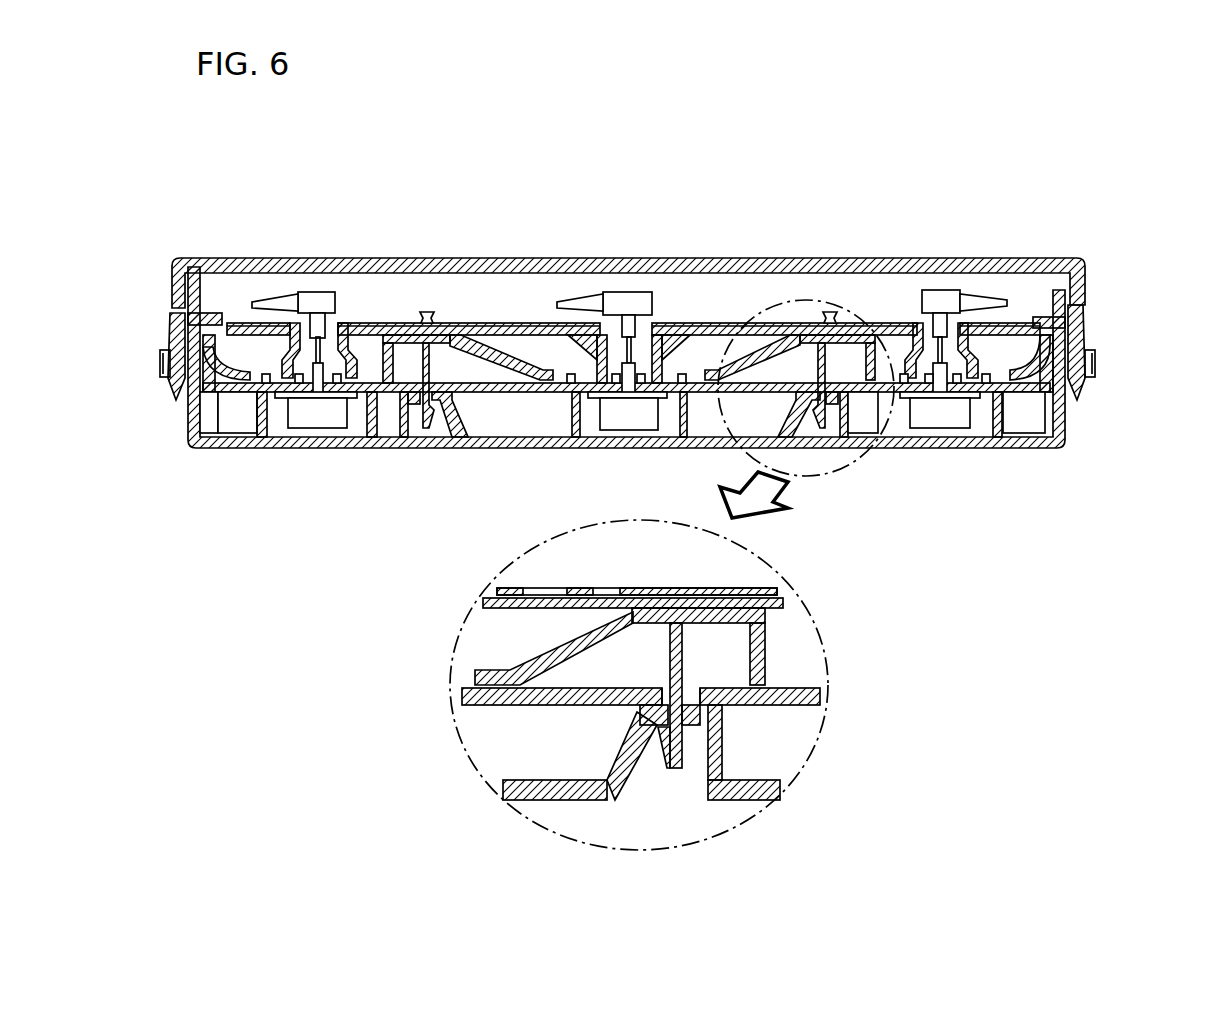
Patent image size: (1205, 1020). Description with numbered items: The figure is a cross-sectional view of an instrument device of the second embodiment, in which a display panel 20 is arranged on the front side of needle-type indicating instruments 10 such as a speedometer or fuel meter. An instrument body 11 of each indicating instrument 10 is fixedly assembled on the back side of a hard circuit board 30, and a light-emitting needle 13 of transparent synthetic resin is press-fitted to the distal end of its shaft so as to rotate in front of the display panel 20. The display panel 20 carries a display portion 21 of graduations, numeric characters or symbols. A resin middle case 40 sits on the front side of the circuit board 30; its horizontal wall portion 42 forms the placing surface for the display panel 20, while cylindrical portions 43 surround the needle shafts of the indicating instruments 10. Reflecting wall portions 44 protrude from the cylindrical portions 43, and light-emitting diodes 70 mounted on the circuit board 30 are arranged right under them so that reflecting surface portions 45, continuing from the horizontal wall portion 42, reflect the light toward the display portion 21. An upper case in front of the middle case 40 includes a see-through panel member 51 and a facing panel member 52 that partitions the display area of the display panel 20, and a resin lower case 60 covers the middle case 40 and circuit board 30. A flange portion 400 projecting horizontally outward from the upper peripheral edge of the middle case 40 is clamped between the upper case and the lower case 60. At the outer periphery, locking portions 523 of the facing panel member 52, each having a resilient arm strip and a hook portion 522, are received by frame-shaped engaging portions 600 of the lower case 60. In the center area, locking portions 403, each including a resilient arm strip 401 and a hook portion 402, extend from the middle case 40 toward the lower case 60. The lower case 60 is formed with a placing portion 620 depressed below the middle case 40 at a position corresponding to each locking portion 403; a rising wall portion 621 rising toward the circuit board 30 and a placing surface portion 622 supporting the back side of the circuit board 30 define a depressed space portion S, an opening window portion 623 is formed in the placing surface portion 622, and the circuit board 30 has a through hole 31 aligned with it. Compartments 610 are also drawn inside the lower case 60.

The needle-type indicating instrument 10 is at (318, 283).
The instrument body 11 is at (317, 415).
The needle 13 is at (283, 302).
The display panel 20 is at (880, 322).
The display portion 21 is at (508, 325).
The circuit board 30 is at (513, 392).
The through hole 31 is at (688, 695).
The middle case 40 is at (758, 647).
The resilient arm strip 401 is at (675, 653).
The hook portion 402 is at (672, 743).
The locking portion 403 is at (433, 430).
The horizontal wall portion 42 is at (407, 330).
The cylindrical portion 43 is at (358, 343).
The reflecting wall portion 44 is at (663, 330).
The reflecting surface portion 45 is at (758, 352).
The see-through panel member 51 is at (865, 258).
The facing panel member 52 is at (212, 312).
The lower case 60 is at (935, 442).
The light-emitting diode 70 is at (268, 380).
The flange portion 400 is at (198, 322).
The frame-shaped engaging portion 600 is at (163, 358).
The compartment 610 is at (205, 418).
The placing portion 620 is at (470, 413).
The rising wall portion 621 is at (713, 745).
The placing surface portion 622 is at (653, 717).
The opening window portion 623 is at (693, 718).
The hook portion 522 is at (172, 384).
The locking portion 523 is at (170, 408).
The depressed space portion S is at (423, 433).